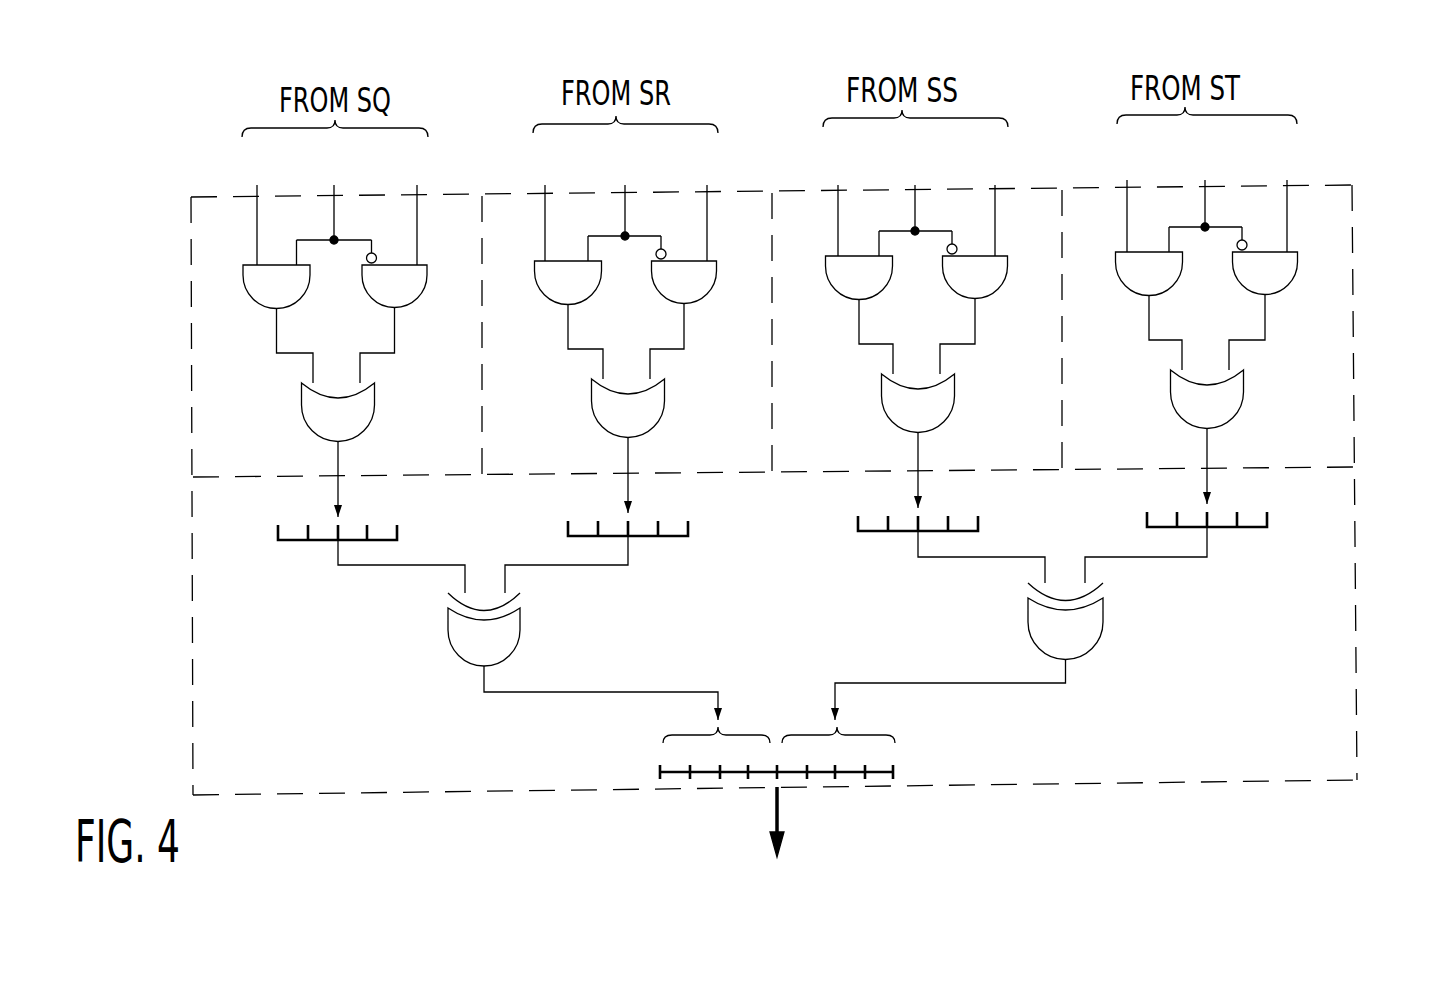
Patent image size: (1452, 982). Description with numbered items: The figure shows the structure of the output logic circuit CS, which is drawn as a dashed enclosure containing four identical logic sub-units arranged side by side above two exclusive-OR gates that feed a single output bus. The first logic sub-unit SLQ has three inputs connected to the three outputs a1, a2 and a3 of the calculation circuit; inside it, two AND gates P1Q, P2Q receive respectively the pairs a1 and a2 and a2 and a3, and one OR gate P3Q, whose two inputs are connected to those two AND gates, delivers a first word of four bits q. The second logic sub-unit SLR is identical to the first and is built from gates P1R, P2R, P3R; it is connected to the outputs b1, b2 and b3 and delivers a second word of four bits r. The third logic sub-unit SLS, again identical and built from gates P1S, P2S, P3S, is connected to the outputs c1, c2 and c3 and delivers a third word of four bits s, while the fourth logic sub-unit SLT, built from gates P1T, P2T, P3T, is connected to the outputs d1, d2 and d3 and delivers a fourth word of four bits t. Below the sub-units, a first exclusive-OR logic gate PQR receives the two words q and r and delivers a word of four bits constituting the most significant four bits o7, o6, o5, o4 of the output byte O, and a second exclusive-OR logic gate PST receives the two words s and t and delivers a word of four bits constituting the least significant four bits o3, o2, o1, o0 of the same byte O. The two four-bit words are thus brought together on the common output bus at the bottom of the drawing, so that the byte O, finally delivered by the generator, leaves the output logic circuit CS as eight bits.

The output of sub-unit SQ a1 is at (254, 209).
The output of sub-unit SR a2 is at (337, 209).
The output of sub-unit SS a3 is at (416, 209).
The output of sub-unit SR b1 is at (548, 204).
The output of sub-unit SS b2 is at (627, 204).
The output of sub-unit ST b3 is at (715, 204).
The output of sub-unit SQ c1 is at (830, 200).
The output of sub-unit SS c2 is at (918, 200).
The output of sub-unit ST c3 is at (1000, 200).
The output of sub-unit SQ d1 is at (1122, 196).
The output of sub-unit SR d2 is at (1208, 196).
The output of sub-unit ST d3 is at (1297, 196).
The AND gate P1Q is at (276, 286).
The AND gate P2Q is at (394, 286).
The OR gate P3Q is at (338, 412).
The AND gate P1R is at (568, 283).
The AND gate P2R is at (684, 282).
The OR gate P3R is at (628, 408).
The AND gate P1S is at (859, 278).
The AND gate P2S is at (975, 277).
The OR gate P3S is at (918, 403).
The AND gate P1T is at (1149, 274).
The AND gate P2T is at (1265, 273).
The OR gate P3T is at (1207, 399).
The first logic sub-unit SLQ is at (261, 479).
The second logic sub-unit SLR is at (547, 470).
The third logic sub-unit SLS is at (830, 466).
The fourth logic sub-unit SLT is at (1292, 463).
The first word of 4 bits q is at (284, 545).
The second word of 4 bits r is at (665, 538).
The third word of 4 bits s is at (885, 533).
The fourth word of 4 bits t is at (1249, 530).
The first exclusive-OR logic gate PQR is at (484, 629).
The second exclusive-OR logic gate PST is at (1065, 621).
The output byte O is at (655, 769).
The least significant bit of the output byte o0 is at (880, 779).
The bit O(1) of the output byte o1 is at (853, 779).
The bit O(2) of the output byte o2 is at (820, 779).
The bit O(3) of the output byte o3 is at (790, 779).
The bit O(4) of the output byte o4 is at (767, 779).
The bit O(5) of the output byte o5 is at (740, 779).
The bit O(6) of the output byte o6 is at (698, 779).
The most significant bit of the output byte o7 is at (668, 779).
The output logic circuit CS is at (1360, 750).